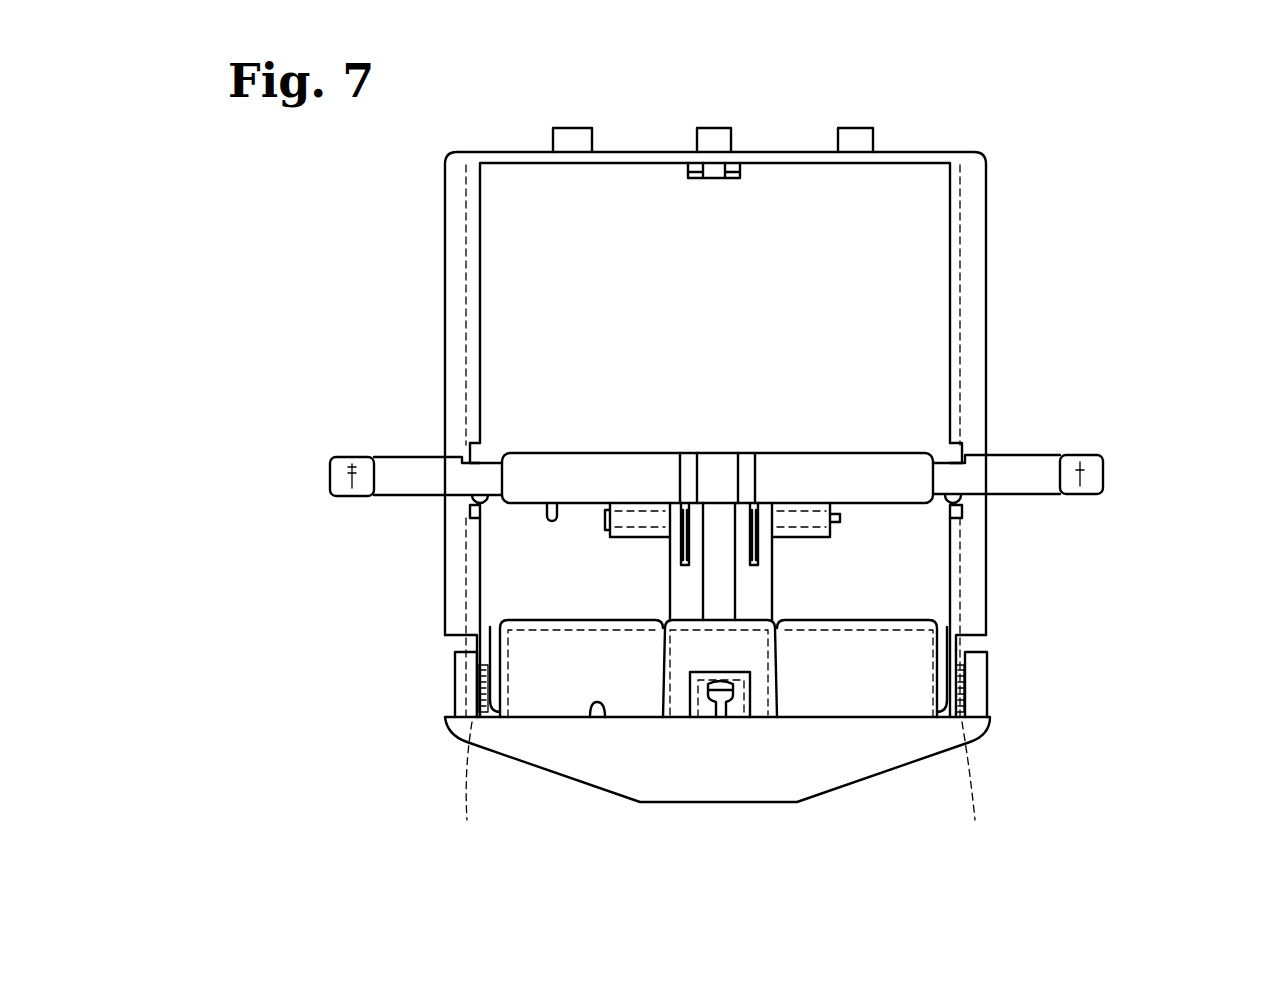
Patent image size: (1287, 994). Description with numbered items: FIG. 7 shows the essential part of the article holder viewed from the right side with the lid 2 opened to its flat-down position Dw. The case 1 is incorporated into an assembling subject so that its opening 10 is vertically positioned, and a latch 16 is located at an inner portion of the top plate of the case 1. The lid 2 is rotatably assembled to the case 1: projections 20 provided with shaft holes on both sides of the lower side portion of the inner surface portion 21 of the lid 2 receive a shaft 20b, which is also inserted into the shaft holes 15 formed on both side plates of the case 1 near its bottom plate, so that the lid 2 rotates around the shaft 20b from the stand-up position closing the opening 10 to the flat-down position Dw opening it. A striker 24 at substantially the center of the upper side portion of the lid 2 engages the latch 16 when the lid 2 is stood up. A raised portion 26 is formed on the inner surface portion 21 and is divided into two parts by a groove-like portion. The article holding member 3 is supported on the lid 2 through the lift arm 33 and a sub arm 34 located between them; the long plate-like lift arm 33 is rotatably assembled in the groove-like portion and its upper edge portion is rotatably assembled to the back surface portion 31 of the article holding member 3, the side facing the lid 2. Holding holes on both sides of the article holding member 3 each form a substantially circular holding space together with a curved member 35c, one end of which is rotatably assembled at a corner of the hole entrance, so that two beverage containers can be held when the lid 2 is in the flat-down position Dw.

The case 1 is at (972, 224).
The opening 10 is at (905, 318).
The latch 16 is at (720, 168).
The article holding member 3 is at (850, 455).
The back surface portion 31 is at (555, 513).
The sub arm 34 is at (718, 512).
The lift arm 33 is at (765, 585).
The curved member 35c is at (346, 470).
The inner surface portion 21 is at (598, 717).
The raised portion 26 is at (766, 650).
The striker 24 is at (722, 702).
The projections 20 is at (462, 694).
The shaft 20b is at (478, 668).
The lid 2 is at (726, 803).
The shaft holes 15 is at (725, 785).
The flat-down position Dw is at (1105, 273).